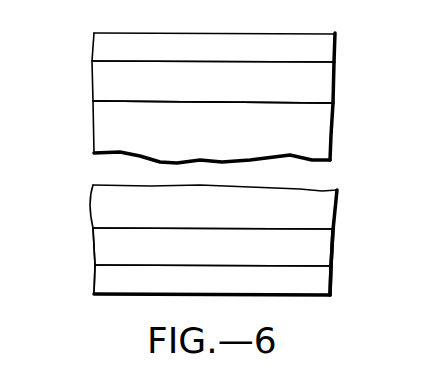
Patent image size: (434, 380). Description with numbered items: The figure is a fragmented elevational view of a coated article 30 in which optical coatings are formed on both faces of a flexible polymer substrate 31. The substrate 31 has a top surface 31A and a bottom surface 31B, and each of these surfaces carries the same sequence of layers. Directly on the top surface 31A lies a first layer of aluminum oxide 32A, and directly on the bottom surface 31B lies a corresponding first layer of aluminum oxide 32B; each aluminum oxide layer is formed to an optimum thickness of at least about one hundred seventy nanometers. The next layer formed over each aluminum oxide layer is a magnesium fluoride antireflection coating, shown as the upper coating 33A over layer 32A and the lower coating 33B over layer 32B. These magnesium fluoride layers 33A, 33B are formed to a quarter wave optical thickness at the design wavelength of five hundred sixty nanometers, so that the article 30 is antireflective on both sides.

The coated article 30 is at (398, 191).
The flexible polymer substrate 31 is at (338, 132).
The top surface 31A is at (101, 101).
The bottom surface 31B is at (120, 227).
The first layer of aluminum oxide 32A is at (337, 88).
The first layer of aluminum oxide 32B is at (337, 242).
The magnesium fluoride antireflection coating 33A is at (337, 44).
The magnesium fluoride antireflection coating 33B is at (335, 282).